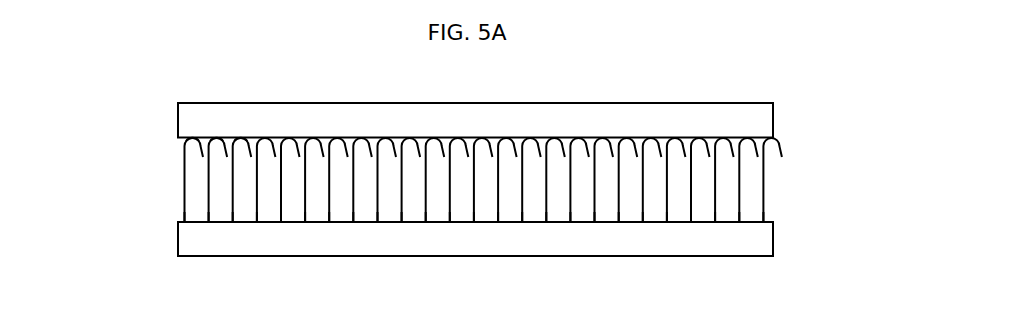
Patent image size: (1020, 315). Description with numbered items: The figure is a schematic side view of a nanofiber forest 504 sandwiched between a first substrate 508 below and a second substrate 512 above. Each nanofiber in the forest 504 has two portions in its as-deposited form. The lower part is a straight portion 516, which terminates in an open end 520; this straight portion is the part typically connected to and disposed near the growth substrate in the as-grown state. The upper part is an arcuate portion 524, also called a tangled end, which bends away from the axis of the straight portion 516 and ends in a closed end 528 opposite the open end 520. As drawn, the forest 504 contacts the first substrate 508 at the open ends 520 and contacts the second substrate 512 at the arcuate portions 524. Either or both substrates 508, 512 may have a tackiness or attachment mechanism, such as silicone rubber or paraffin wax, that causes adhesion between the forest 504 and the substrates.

The nanofiber forest 504 is at (478, 181).
The first substrate 508 is at (475, 239).
The second substrate 512 is at (475, 120).
The straight portion 516 is at (176, 190).
The open end 520 is at (224, 234).
The arcuate portion 524 is at (198, 132).
The closed end 528 is at (153, 127).